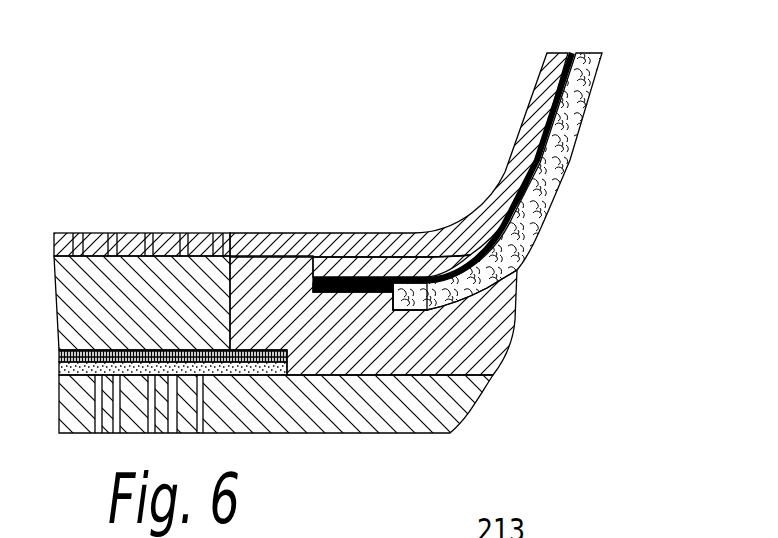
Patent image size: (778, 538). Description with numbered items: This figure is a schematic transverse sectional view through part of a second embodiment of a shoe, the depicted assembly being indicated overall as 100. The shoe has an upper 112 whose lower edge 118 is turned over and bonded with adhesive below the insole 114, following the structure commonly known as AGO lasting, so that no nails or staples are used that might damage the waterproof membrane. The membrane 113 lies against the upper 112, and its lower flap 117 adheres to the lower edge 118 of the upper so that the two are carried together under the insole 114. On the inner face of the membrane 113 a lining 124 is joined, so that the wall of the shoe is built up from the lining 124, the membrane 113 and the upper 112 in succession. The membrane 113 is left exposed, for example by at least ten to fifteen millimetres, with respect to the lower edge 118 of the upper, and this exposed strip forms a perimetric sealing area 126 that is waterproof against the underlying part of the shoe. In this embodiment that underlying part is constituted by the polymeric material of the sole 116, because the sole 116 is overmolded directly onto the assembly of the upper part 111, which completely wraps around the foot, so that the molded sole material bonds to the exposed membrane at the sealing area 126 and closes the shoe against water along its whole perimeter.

The display assembly 100 is at (283, 130).
The upper part 111 is at (584, 192).
The upper 112 is at (585, 90).
The membrane 113 is at (573, 53).
The insole 114 is at (168, 234).
The sole 116 is at (518, 347).
The lower flap 117 is at (340, 280).
The lower edge 118 is at (428, 302).
The lining 124 is at (548, 74).
The perimetric sealing area 126 is at (368, 318).